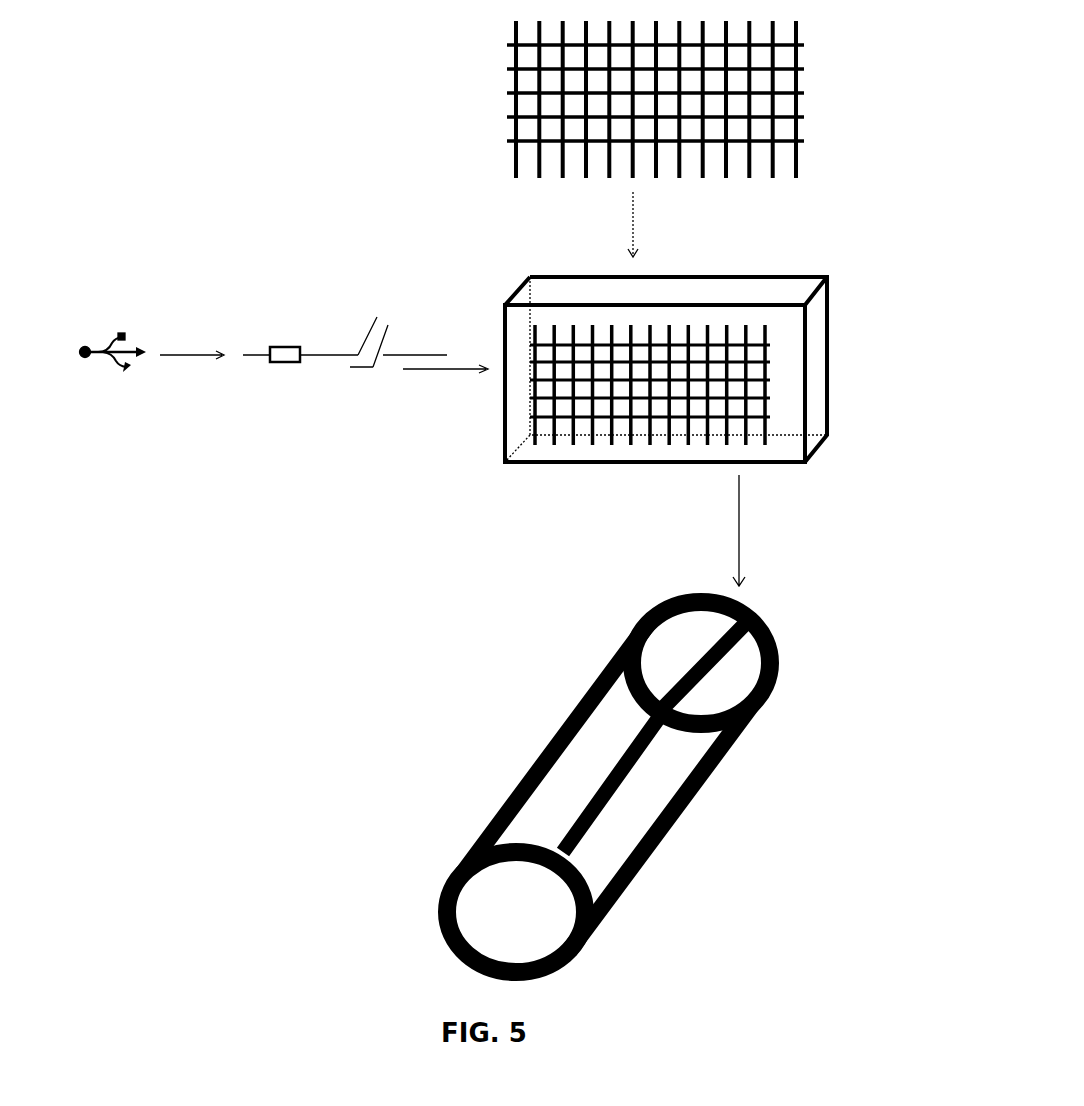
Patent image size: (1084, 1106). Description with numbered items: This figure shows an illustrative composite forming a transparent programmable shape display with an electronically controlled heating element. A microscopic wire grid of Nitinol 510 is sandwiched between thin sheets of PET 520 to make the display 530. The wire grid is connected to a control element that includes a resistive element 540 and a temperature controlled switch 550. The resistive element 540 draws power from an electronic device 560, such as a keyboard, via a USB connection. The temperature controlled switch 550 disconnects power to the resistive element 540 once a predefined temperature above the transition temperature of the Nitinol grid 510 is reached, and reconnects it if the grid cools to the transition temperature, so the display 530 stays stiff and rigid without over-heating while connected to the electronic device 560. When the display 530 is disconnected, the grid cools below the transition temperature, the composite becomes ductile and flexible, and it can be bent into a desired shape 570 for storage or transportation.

The wire grid of Nitinol 510 is at (630, 233).
The thin sheets of PET 520 is at (688, 369).
The display 530 is at (655, 478).
The resistive element 540 is at (300, 376).
The temperature controlled switch 550 is at (397, 361).
The electronic device 560 is at (115, 371).
The desired shape 570 is at (608, 787).